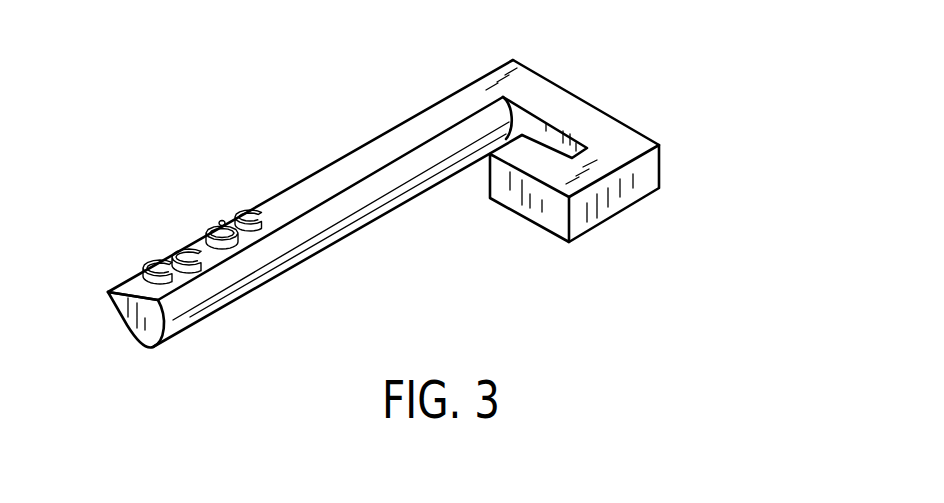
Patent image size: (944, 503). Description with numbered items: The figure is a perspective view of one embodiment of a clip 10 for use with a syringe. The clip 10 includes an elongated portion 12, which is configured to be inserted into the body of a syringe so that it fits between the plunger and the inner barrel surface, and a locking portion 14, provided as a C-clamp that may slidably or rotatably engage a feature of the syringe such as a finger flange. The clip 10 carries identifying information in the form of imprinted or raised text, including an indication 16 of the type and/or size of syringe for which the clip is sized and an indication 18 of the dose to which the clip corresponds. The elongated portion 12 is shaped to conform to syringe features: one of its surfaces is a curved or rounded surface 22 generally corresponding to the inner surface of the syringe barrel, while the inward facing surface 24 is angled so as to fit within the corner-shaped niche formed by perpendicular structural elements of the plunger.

The clip 10 is at (705, 51).
The elongated portion 12 is at (507, 57).
The locking portion 14 is at (667, 143).
The indication of syringe type and/or size 16 is at (644, 158).
The indication of dose 18 is at (282, 236).
The curved or rounded surface 22 is at (178, 316).
The inward facing surface 24 is at (107, 294).